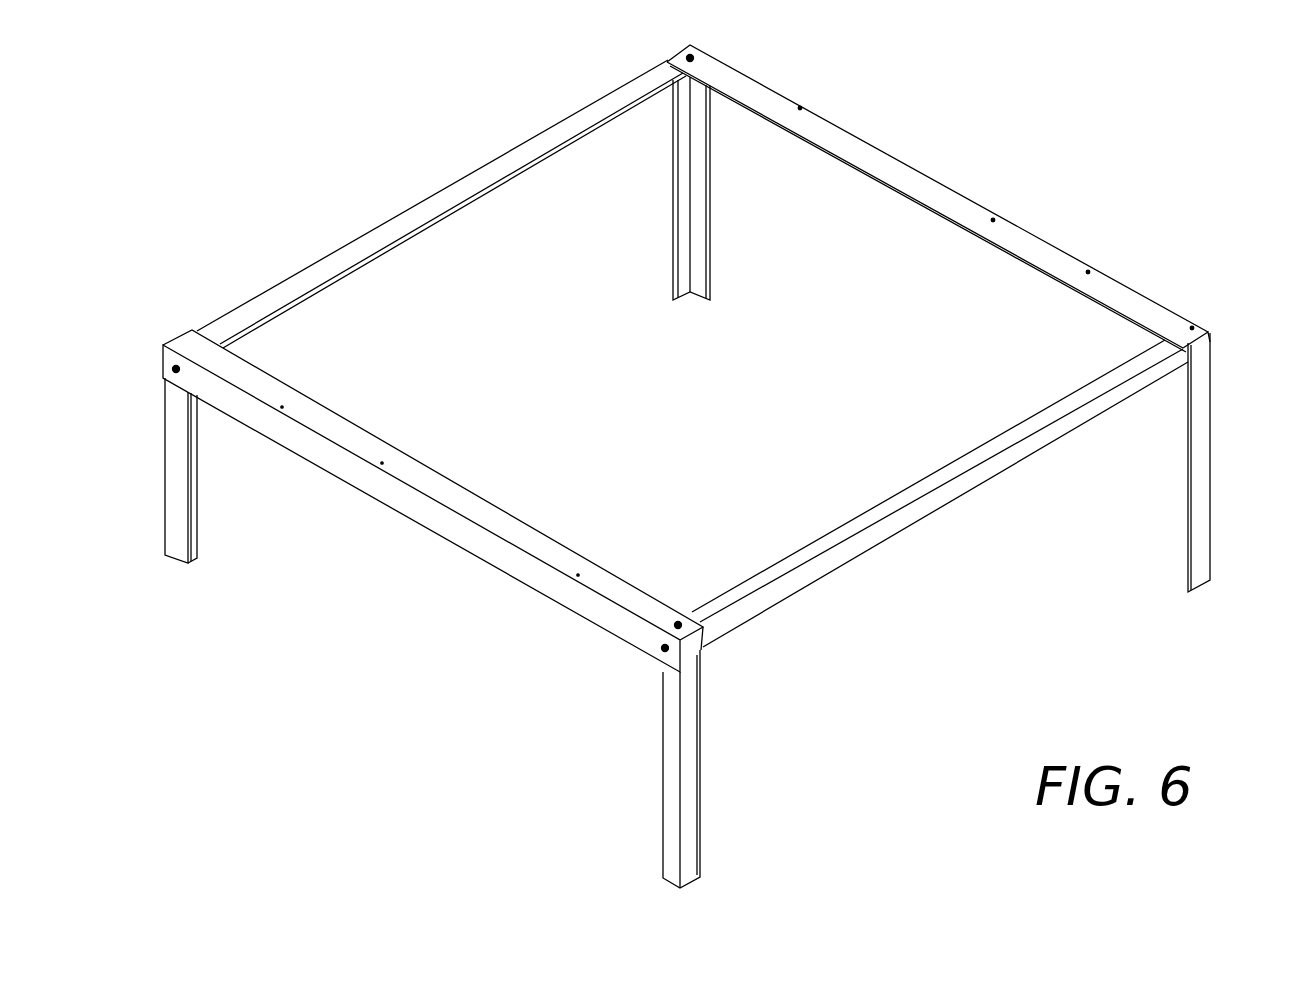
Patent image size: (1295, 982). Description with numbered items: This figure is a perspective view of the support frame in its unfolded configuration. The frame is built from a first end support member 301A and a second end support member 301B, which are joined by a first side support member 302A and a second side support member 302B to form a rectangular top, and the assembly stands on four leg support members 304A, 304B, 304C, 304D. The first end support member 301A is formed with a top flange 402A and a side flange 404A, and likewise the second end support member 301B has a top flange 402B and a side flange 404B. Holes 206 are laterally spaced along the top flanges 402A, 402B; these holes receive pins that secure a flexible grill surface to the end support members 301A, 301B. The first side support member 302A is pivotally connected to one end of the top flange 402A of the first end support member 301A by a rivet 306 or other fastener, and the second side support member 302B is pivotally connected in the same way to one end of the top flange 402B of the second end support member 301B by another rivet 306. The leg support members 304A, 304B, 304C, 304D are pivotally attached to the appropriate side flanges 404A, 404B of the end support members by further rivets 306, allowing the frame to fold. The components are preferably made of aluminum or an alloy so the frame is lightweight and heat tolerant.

The holes 206 is at (893, 163).
The first end support member 301A is at (873, 143).
The second end support member 301B is at (447, 537).
The first side support member 302A is at (417, 213).
The second side support member 302B is at (940, 497).
The leg support member 304A is at (1200, 498).
The leg support member 304B is at (702, 263).
The leg support member 304C is at (695, 782).
The leg support member 304D is at (172, 537).
The rivet 306 is at (692, 42).
The top flange 402A is at (823, 128).
The top flange 402B is at (337, 423).
The side flange 404A is at (1210, 347).
The side flange 404B is at (318, 452).